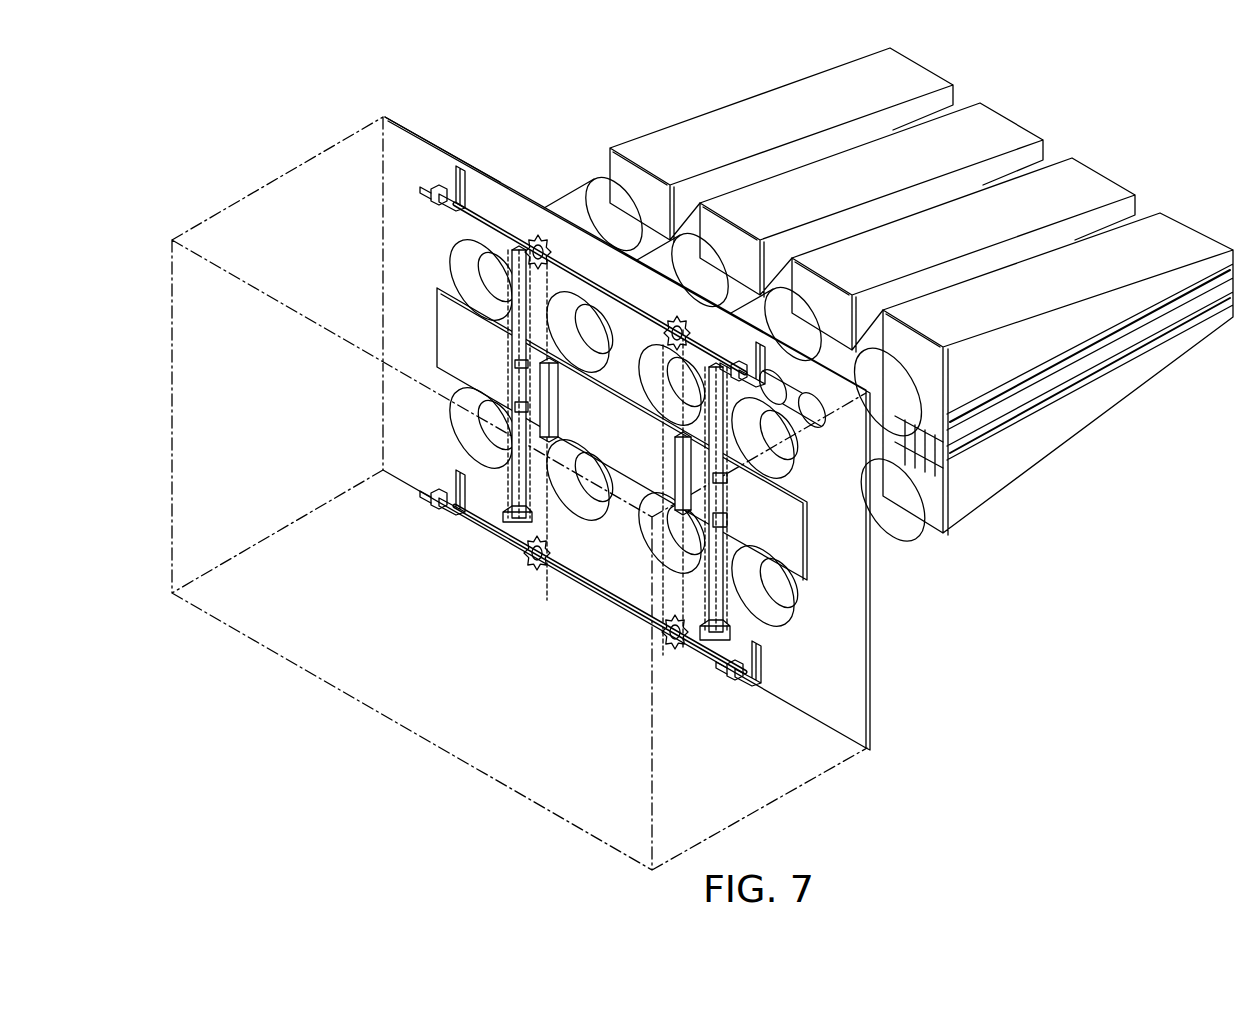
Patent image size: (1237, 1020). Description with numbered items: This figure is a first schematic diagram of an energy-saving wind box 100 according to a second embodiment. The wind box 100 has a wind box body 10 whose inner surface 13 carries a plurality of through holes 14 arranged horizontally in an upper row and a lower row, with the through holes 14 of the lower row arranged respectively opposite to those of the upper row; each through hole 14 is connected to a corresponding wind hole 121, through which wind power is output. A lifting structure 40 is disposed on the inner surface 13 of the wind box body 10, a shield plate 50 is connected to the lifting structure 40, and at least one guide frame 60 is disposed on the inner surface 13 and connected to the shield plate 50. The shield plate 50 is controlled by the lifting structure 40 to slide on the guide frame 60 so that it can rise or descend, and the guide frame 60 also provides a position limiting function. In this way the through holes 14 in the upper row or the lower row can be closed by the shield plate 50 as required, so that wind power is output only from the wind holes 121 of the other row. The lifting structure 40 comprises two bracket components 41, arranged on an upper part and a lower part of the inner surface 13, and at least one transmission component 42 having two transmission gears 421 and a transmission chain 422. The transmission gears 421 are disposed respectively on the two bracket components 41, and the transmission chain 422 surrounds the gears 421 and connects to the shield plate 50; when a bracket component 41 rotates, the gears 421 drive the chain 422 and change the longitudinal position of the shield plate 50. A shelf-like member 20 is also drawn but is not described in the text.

The wind box body 10 is at (593, 397).
The inner surface 13 is at (396, 183).
The through holes 14 is at (414, 280).
The wind holes 121 is at (476, 268).
The shelf 20 is at (462, 250).
The shield plate 50 is at (815, 548).
The guide frame 60 is at (496, 461).
The lifting structure 40 is at (612, 418).
The bracket components 41 is at (625, 263).
The transmission component 42 is at (577, 578).
The transmission gears 421 is at (512, 200).
The transmission chain 422 is at (495, 541).
The energy-saving wind box 100 is at (894, 679).